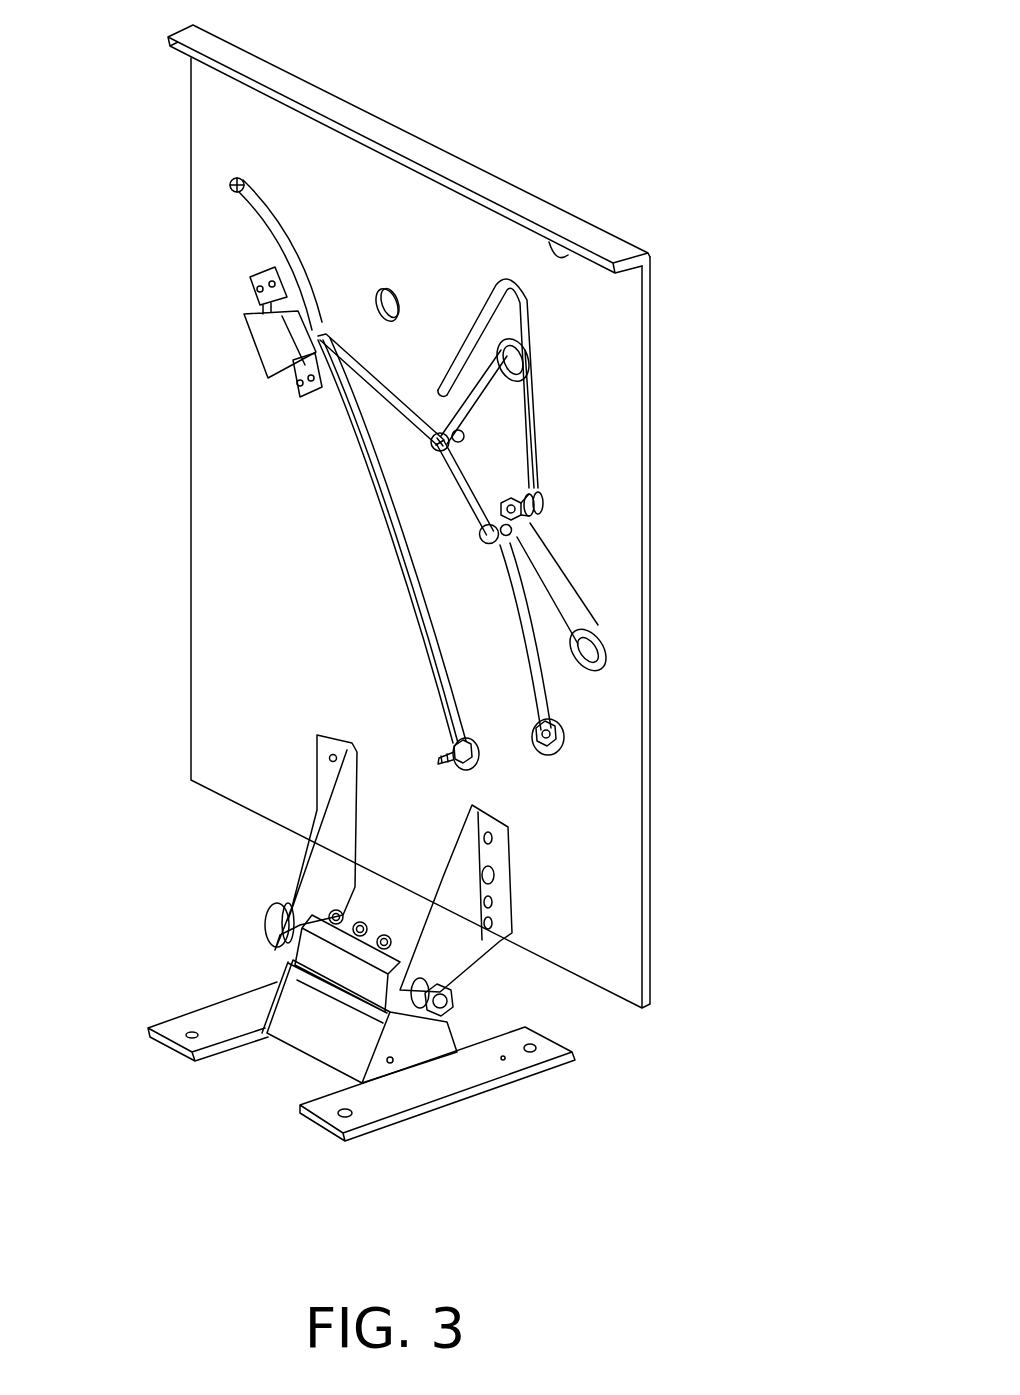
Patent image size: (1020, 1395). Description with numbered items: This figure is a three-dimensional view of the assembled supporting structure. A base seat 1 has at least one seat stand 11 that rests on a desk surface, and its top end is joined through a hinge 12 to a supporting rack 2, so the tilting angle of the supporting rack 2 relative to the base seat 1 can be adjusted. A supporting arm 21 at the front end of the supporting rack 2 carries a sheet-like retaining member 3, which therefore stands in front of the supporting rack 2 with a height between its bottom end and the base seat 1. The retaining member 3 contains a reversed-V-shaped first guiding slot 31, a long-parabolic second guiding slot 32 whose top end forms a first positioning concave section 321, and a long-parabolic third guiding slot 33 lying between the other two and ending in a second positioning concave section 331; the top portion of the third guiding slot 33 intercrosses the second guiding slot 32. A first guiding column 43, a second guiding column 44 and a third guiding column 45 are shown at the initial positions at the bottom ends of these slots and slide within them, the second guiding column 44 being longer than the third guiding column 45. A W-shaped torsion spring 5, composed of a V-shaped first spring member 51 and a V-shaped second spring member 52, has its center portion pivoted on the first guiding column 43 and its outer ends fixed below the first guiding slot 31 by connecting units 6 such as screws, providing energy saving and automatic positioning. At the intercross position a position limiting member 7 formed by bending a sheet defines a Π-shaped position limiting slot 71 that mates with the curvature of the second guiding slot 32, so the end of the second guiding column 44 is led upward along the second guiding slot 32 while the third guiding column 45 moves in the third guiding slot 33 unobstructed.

The base seat 1 is at (307, 1035).
The seat stand 11 is at (403, 1100).
The hinge 12 is at (460, 983).
The supporting rack 2 is at (333, 865).
The supporting arm 21 is at (493, 857).
The retaining member 3 is at (227, 530).
The first guiding slot 31 is at (500, 287).
The second guiding slot 32 is at (410, 577).
The first positioning concave section 321 is at (233, 183).
The third guiding slot 33 is at (520, 620).
The second positioning concave section 331 is at (320, 320).
The first guiding column 43 is at (545, 490).
The second guiding column 44 is at (480, 762).
The third guiding column 45 is at (563, 733).
The torsion spring 5 is at (606, 265).
The first spring member 51 is at (553, 567).
The second spring member 52 is at (468, 402).
The connecting unit 6 is at (452, 449).
The position limiting member 7 is at (262, 334).
The position limiting slot 71 is at (285, 362).